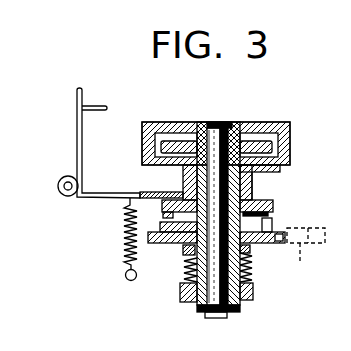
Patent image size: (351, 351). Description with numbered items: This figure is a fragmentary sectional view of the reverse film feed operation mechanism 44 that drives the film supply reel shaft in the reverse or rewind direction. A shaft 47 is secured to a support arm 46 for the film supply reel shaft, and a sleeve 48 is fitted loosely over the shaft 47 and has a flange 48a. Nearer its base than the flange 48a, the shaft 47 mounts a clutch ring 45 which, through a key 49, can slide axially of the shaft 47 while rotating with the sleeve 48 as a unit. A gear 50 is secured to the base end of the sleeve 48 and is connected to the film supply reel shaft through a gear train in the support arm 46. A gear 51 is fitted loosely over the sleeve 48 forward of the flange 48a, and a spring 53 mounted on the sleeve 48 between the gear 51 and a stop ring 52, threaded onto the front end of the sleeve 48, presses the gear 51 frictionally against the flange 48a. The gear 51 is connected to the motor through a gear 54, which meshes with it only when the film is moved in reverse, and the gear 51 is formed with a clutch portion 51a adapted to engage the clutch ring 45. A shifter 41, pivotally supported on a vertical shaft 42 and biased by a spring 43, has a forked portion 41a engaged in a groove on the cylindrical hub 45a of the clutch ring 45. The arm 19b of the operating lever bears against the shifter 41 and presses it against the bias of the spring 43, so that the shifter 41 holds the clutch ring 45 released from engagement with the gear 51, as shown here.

The arm of operating lever 19b is at (100, 105).
The shifter 41 is at (77, 117).
The forked portion 41a is at (180, 195).
The vertical shaft 42 is at (62, 178).
The spring 43 is at (125, 218).
The reverse film feed operation mechanism 44 is at (294, 149).
The clutch ring 45 is at (263, 197).
The cylindrical hub 45a is at (280, 168).
The support arm 46 is at (278, 122).
The shaft 47 is at (220, 309).
The sleeve 48 is at (233, 122).
The flange 48a is at (272, 221).
The key 49 is at (258, 181).
The gear 50 is at (169, 141).
The gear 51 is at (263, 243).
The clutch portion 51a is at (158, 233).
The stop ring 52 is at (180, 292).
The spring 53 is at (182, 258).
The gear 54 is at (317, 253).